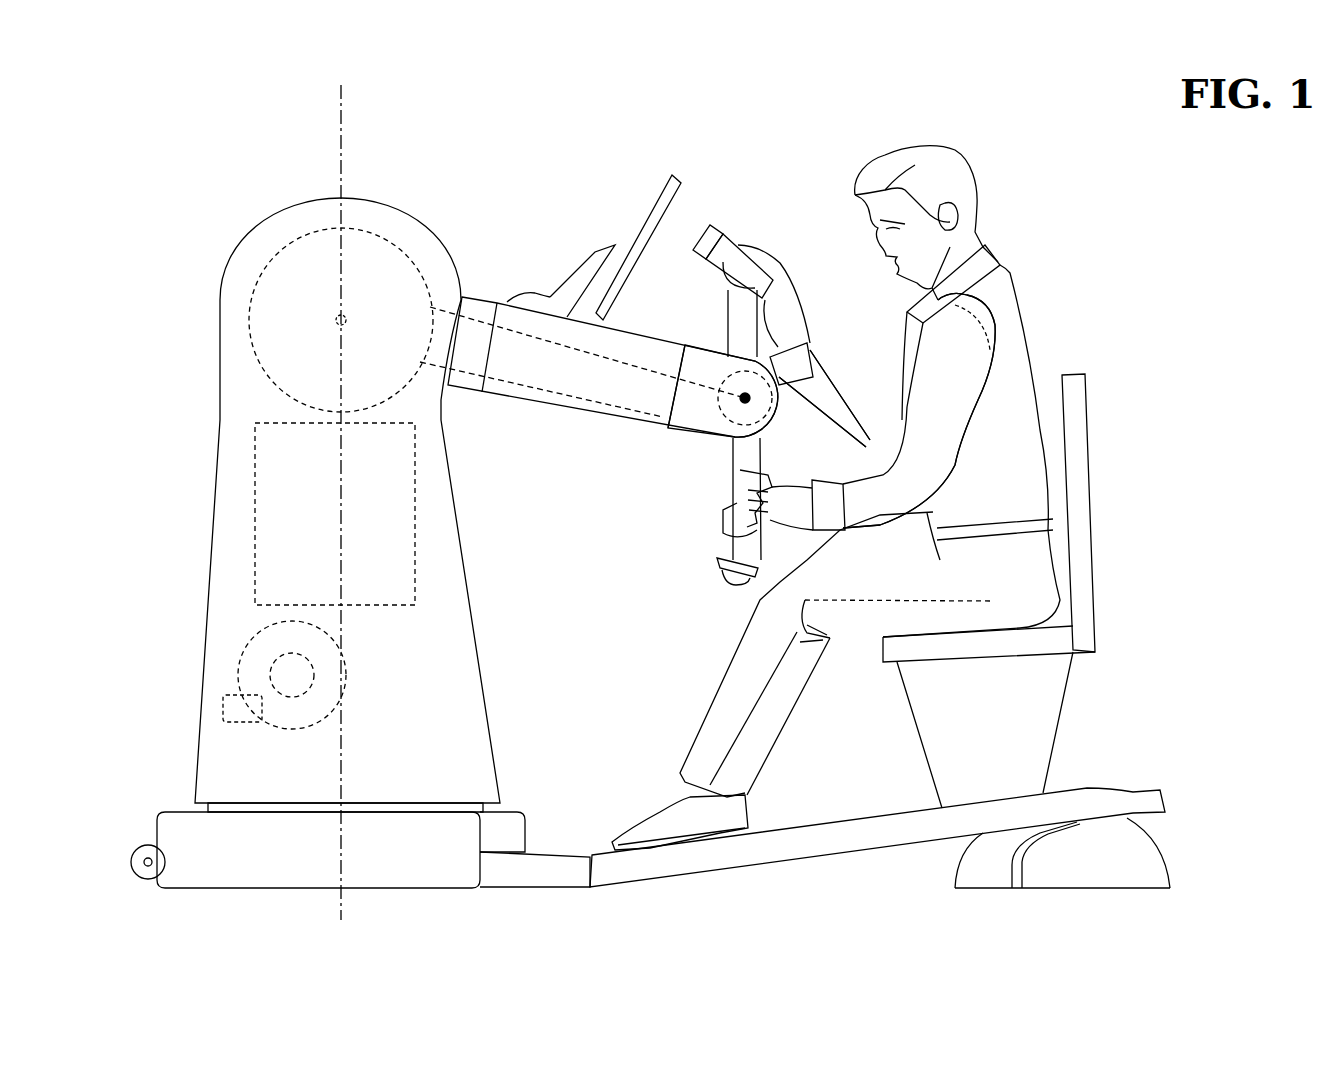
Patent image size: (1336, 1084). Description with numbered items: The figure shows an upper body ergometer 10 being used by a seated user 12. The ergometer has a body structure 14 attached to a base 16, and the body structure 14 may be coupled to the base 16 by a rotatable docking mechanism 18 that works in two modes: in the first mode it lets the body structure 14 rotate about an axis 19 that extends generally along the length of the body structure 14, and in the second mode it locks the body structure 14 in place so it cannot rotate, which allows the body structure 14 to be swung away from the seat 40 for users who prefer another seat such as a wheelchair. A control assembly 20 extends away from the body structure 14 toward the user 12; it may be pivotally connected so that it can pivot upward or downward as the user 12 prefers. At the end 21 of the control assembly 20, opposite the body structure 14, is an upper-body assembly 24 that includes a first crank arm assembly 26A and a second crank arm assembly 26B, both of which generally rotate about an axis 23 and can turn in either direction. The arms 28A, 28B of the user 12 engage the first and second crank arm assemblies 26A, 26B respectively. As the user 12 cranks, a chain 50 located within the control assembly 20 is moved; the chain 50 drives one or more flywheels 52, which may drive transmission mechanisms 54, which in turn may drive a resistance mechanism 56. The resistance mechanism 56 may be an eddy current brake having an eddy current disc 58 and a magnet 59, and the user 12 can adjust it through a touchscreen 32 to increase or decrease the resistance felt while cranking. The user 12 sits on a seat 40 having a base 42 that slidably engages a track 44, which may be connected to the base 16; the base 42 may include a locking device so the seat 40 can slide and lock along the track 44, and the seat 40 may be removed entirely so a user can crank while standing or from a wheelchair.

The upper body ergometer 10 is at (545, 130).
The user 12 is at (1010, 273).
The body structure 14 is at (230, 392).
The base 16 is at (286, 876).
The rotatable docking mechanism 18 is at (200, 808).
The axis 19 is at (335, 130).
The control assembly 20 is at (483, 310).
The end 21 is at (790, 393).
The axis 23 is at (745, 398).
The upper-body assembly 24 is at (712, 470).
The first crank arm assembly 26A is at (738, 245).
The second crank arm assembly 26B is at (712, 548).
The arm 28A is at (850, 423).
The arm 28B is at (967, 403).
The touchscreen 32 is at (645, 220).
The seat 40 is at (1088, 470).
The base 42 is at (1055, 722).
The track 44 is at (805, 845).
The chain 50 is at (440, 318).
The flywheel 52 is at (281, 245).
The transmission mechanism 54 is at (252, 474).
The resistance mechanism 56 is at (222, 670).
The eddy current disc 58 is at (252, 637).
The magnet 59 is at (222, 708).